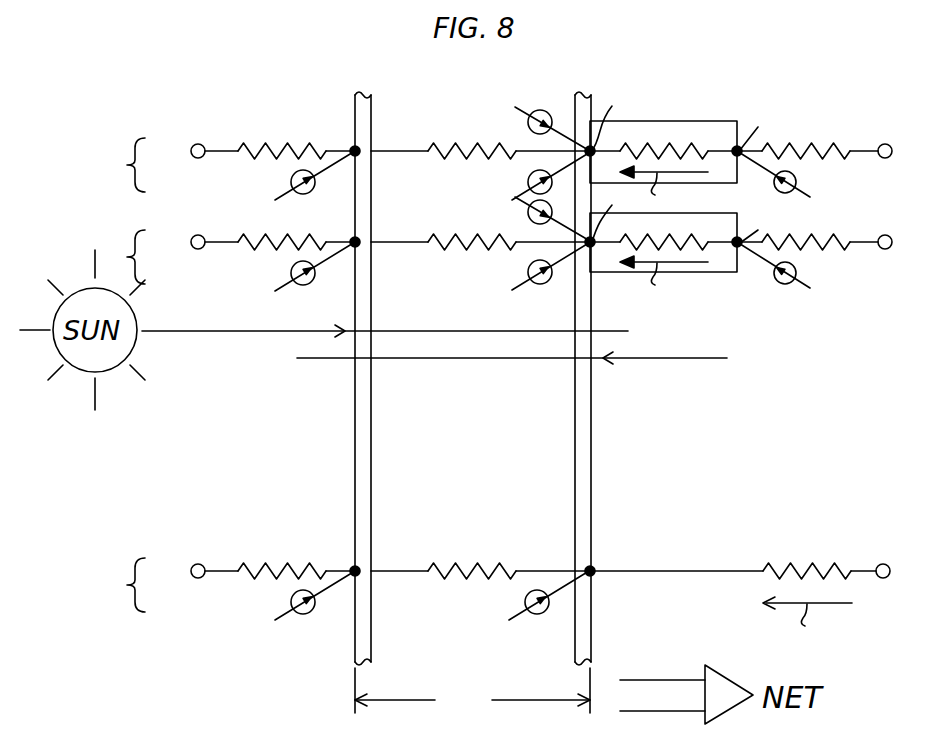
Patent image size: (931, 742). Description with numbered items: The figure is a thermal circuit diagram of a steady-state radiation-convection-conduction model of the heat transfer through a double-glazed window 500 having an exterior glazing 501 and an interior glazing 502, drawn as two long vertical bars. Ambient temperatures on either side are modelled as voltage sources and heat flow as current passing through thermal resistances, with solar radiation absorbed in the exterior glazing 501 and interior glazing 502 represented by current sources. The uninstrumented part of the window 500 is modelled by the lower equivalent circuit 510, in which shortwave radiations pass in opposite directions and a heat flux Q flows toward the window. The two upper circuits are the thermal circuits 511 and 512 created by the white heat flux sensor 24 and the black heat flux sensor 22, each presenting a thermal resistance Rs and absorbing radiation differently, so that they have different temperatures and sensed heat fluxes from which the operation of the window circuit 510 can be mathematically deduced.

The window 500 is at (482, 89).
The exterior glazing 501 is at (365, 96).
The interior glazing 502 is at (585, 97).
The equivalent circuit 510 is at (125, 582).
The thermal circuit 511 is at (129, 165).
The thermal circuit 512 is at (130, 251).
The black heat flux sensor 22 is at (722, 272).
The white heat flux sensor 24 is at (672, 121).